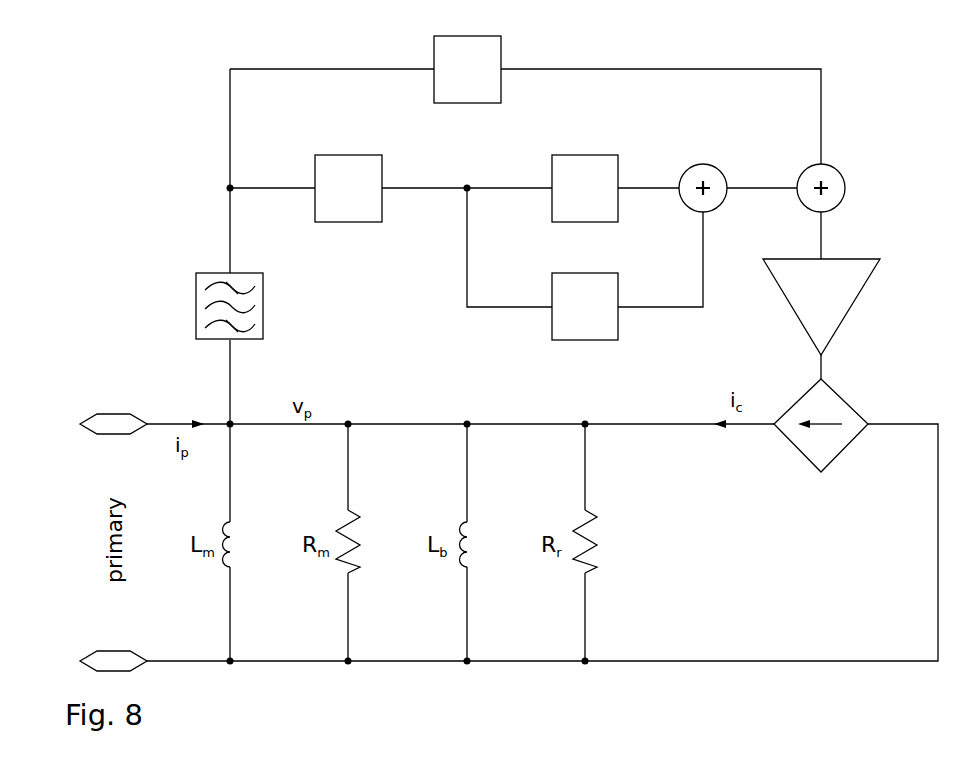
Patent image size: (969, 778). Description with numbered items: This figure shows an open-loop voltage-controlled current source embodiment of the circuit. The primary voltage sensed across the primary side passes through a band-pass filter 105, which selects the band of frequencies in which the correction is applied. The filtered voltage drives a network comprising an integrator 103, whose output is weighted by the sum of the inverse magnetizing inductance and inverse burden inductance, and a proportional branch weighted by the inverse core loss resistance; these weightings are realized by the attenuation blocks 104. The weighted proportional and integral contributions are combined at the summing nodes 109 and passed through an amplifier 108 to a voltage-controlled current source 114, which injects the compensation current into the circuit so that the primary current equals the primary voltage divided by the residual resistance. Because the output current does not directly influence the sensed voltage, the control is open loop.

The integrator 103 is at (355, 218).
The attenuation 104 is at (475, 104).
The filter 105 is at (207, 342).
The amplifier 108 is at (840, 325).
The summing node 109 is at (693, 212).
The controlled current source 114 is at (808, 452).